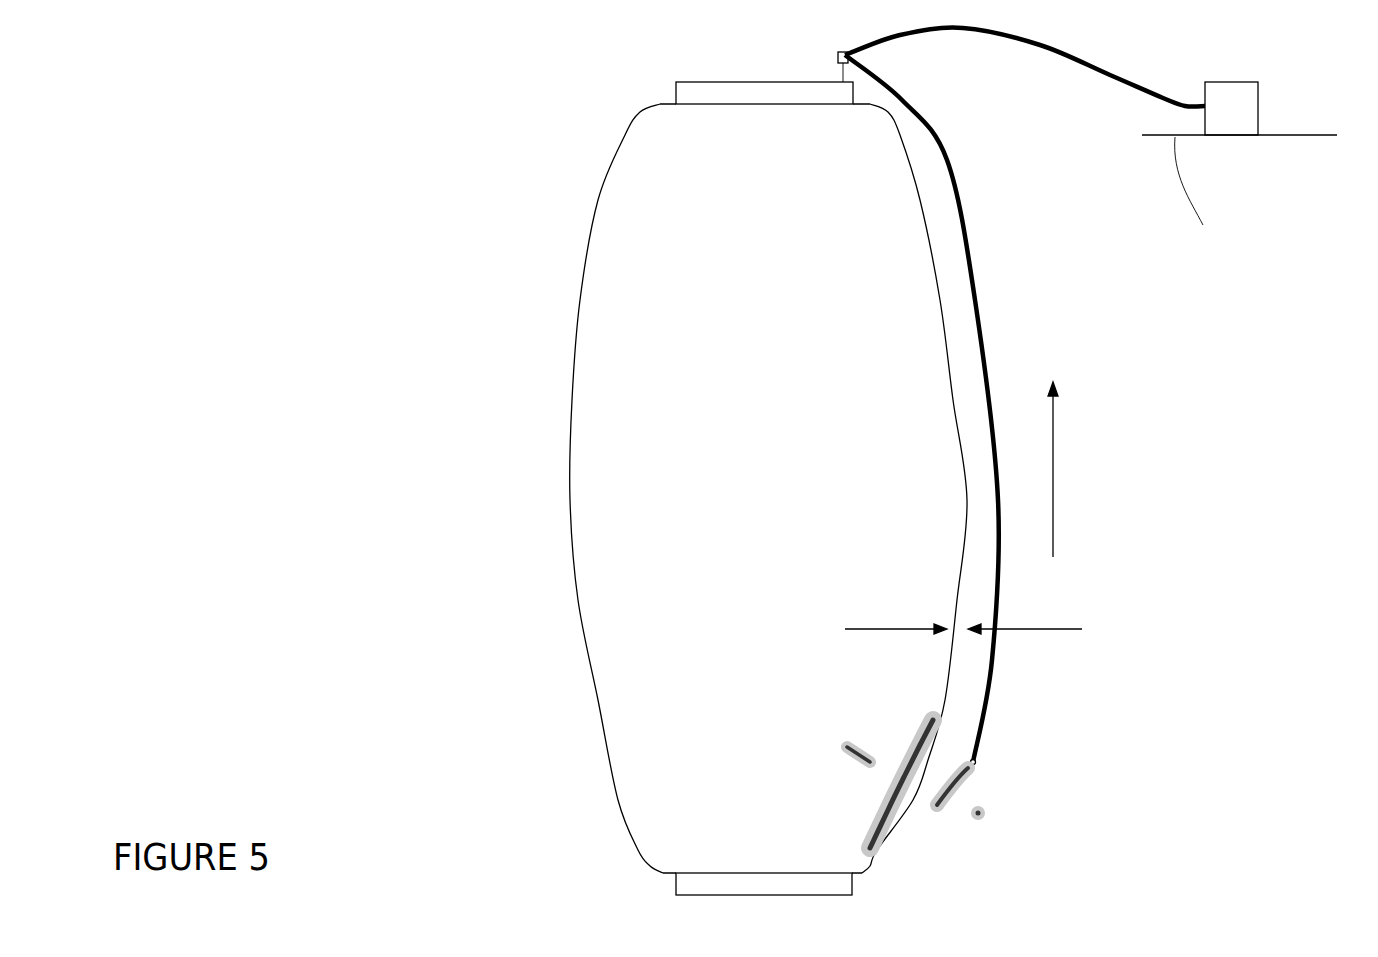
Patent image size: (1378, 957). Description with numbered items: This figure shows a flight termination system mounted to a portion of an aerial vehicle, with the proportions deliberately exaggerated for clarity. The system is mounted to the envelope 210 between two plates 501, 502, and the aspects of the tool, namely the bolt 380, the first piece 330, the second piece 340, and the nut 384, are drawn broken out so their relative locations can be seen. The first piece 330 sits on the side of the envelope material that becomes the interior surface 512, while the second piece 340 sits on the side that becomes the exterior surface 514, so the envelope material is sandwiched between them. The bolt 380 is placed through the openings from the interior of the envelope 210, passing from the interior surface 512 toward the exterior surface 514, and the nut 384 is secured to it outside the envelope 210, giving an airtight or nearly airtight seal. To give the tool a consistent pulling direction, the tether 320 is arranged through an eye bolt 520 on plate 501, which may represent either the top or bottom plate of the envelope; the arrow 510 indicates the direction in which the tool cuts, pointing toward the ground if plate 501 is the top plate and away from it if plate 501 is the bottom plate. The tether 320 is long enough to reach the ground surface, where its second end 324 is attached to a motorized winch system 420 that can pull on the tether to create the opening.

The envelope 210 is at (572, 450).
The plate 501 is at (677, 95).
The plate 502 is at (677, 882).
The eye bolt 520 is at (838, 55).
The tether 320 is at (985, 330).
The second end of the tether 324 is at (1204, 105).
The motorized winch system 420 is at (1258, 118).
The arrow 510 is at (1053, 469).
The interior surface 512 is at (813, 628).
The exterior surface 514 is at (1111, 628).
The first piece 330 is at (905, 757).
The second piece 340 is at (957, 778).
The bolt 380 is at (847, 746).
The nut 384 is at (975, 817).